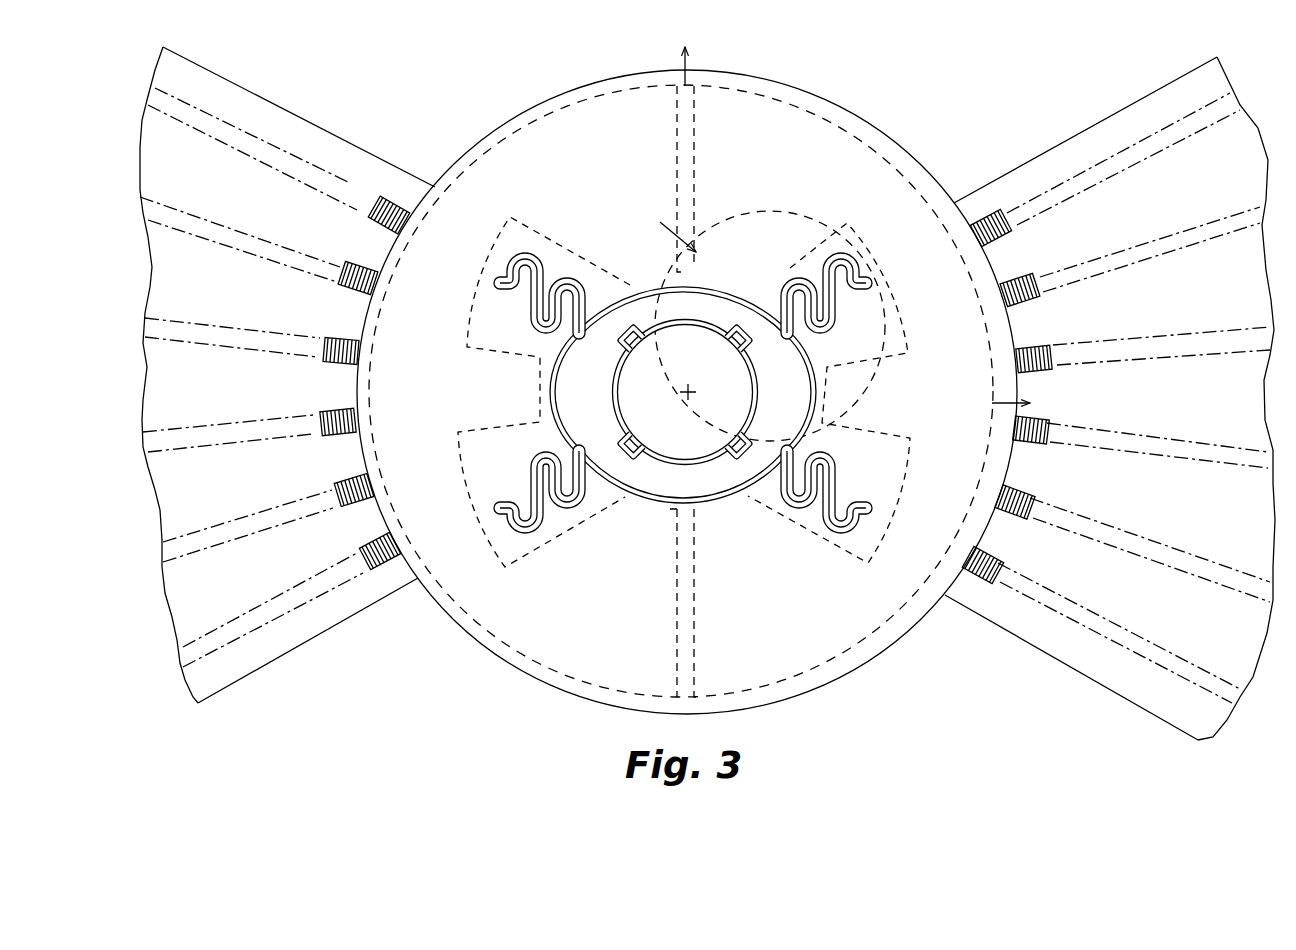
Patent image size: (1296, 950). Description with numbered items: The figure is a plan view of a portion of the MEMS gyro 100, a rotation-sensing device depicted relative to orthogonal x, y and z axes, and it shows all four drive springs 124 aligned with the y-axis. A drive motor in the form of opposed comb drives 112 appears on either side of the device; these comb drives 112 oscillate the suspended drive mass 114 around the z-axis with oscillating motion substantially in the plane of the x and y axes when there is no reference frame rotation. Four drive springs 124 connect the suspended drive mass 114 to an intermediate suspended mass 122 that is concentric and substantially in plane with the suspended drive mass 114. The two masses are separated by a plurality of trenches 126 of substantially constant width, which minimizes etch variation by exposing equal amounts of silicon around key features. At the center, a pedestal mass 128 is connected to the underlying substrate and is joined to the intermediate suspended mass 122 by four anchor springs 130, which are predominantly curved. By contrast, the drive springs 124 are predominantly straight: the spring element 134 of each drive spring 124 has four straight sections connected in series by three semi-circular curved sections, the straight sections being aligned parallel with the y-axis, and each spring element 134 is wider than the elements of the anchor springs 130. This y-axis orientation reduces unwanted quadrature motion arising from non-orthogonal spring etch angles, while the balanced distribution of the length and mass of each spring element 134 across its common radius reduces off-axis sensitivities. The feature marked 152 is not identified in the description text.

The MEMS gyro 100 is at (430, 93).
The comb drives 112 is at (272, 668).
The suspended drive mass 114 is at (475, 625).
The intermediate suspended mass 122 is at (560, 390).
The drive springs 124 is at (554, 272).
The trenches 126 is at (703, 284).
The pedestal mass 128 is at (672, 424).
The anchor springs 130 is at (641, 336).
The spring element 134 is at (546, 325).
The outer circle / disc 152 is at (903, 137).